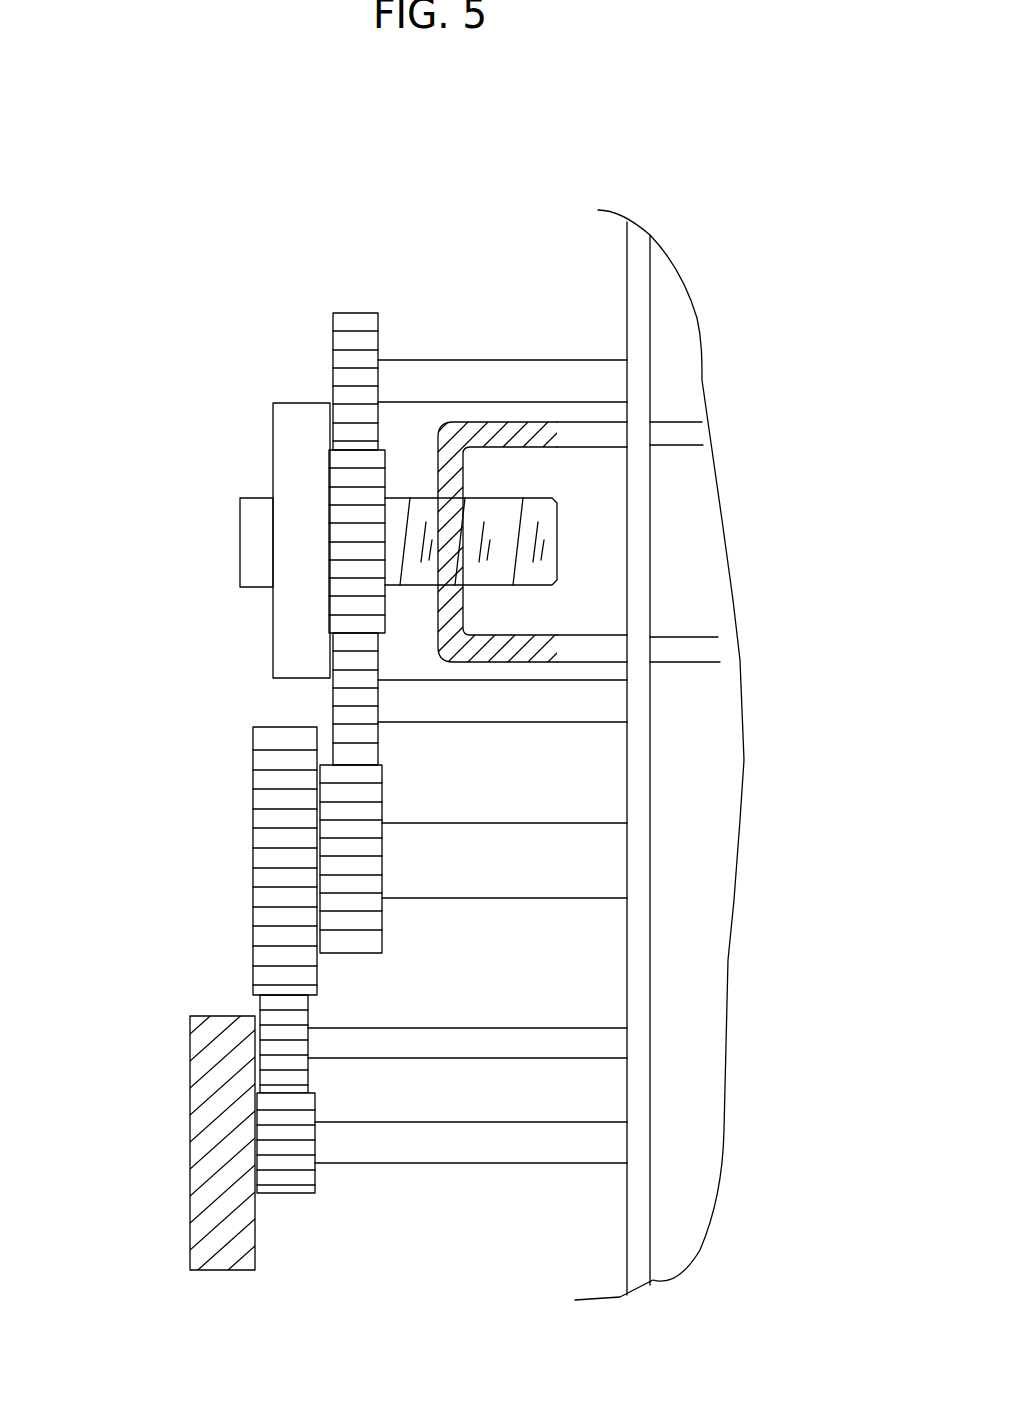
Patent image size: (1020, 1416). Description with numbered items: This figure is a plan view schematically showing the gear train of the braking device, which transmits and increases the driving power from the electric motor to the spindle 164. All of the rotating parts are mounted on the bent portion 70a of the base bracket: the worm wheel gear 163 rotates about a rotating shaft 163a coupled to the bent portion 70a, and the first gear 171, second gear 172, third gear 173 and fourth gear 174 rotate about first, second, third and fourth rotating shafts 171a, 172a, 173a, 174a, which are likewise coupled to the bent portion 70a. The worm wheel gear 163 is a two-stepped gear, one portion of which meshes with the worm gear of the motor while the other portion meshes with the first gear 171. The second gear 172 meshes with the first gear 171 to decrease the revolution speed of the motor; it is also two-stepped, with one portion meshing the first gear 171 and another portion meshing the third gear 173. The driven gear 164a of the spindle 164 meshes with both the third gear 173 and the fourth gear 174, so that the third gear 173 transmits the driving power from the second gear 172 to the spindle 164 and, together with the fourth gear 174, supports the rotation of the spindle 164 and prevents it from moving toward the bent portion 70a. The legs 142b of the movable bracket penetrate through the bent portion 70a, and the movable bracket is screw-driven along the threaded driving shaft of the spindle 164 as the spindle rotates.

The bent portion 70a is at (640, 1217).
The legs 142b is at (680, 427).
The worm wheel gear 163 is at (203, 1138).
The rotating shaft of the worm wheel gear 163a is at (405, 1153).
The spindle 164 is at (290, 442).
The driven gear 164a is at (402, 510).
The first gear 171 is at (262, 1008).
The first rotating shaft 171a is at (520, 1040).
The second gear 172 is at (260, 848).
The second rotating shaft 172a is at (558, 838).
The third gear 173 is at (330, 690).
The third rotating shaft 173a is at (585, 710).
The fourth gear 174 is at (340, 355).
The fourth rotating shaft 174a is at (523, 378).